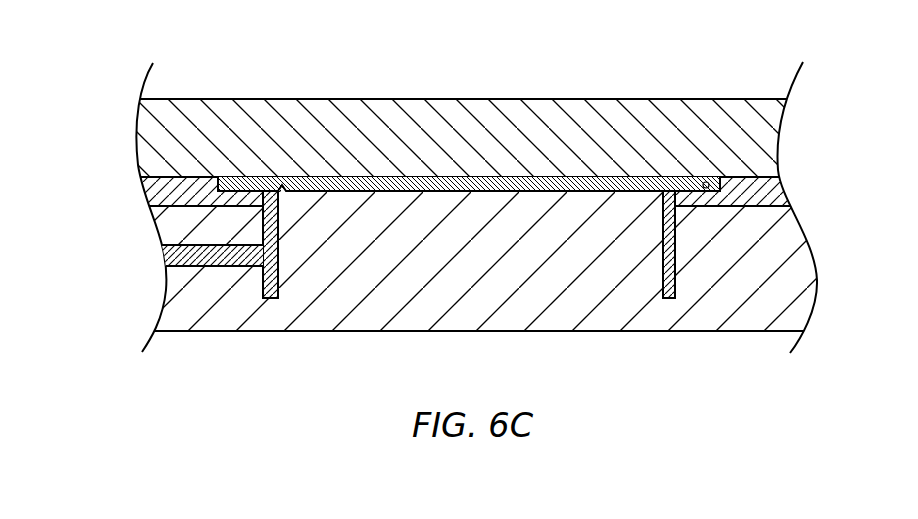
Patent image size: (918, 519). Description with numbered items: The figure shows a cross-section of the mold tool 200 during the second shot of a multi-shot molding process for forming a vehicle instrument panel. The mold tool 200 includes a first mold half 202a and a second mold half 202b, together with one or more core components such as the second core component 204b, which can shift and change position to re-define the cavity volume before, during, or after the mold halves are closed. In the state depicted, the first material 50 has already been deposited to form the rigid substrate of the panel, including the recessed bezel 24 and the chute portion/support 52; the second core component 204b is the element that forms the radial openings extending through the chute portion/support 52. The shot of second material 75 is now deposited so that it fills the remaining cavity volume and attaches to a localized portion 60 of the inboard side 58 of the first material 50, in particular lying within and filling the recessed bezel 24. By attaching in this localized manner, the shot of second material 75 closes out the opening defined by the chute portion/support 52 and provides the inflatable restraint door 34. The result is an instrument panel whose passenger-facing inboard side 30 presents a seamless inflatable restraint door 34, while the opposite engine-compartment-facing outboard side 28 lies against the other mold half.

The mold tool 200 is at (203, 65).
The first mold half 202a is at (480, 110).
The second mold half 202b is at (455, 318).
The shot of second material 75 is at (524, 202).
The first material 50 is at (157, 194).
The second core component 204b is at (163, 258).
The inflatable restraint door 34 is at (408, 186).
The chute portion/support 52 is at (663, 257).
The localized portion 60 is at (680, 182).
The inboard side 58 is at (723, 184).
The inboard side 30 is at (756, 261).
The outboard side 28 is at (748, 207).
The recessed bezel 24 is at (712, 190).